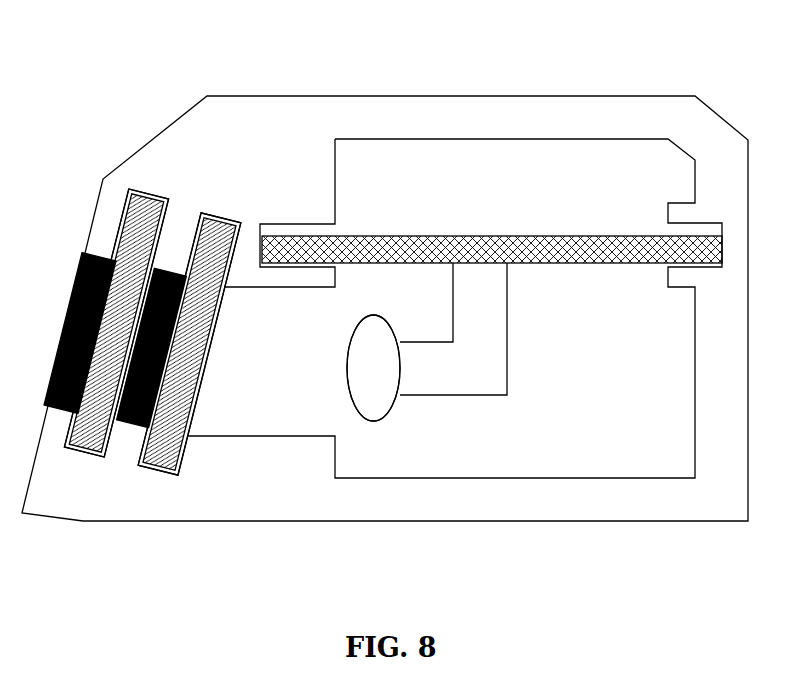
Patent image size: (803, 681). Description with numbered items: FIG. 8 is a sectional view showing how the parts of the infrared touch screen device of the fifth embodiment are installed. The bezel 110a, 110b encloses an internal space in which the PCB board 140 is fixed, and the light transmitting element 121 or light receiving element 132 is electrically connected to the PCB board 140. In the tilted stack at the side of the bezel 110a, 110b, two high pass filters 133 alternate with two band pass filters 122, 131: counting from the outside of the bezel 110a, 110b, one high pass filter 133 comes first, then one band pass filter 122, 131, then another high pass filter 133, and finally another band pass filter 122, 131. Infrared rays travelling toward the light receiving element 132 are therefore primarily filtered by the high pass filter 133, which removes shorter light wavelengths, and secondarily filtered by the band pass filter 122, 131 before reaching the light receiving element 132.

The bezel 110a is at (237, 123).
The bezel 110b is at (237, 123).
The PCB board 140 is at (409, 235).
The light transmitting element 121 is at (372, 372).
The light receiving element 132 is at (372, 372).
The high pass filter 133 is at (135, 422).
The band pass filter 122 is at (148, 433).
The band pass filter 131 is at (148, 433).